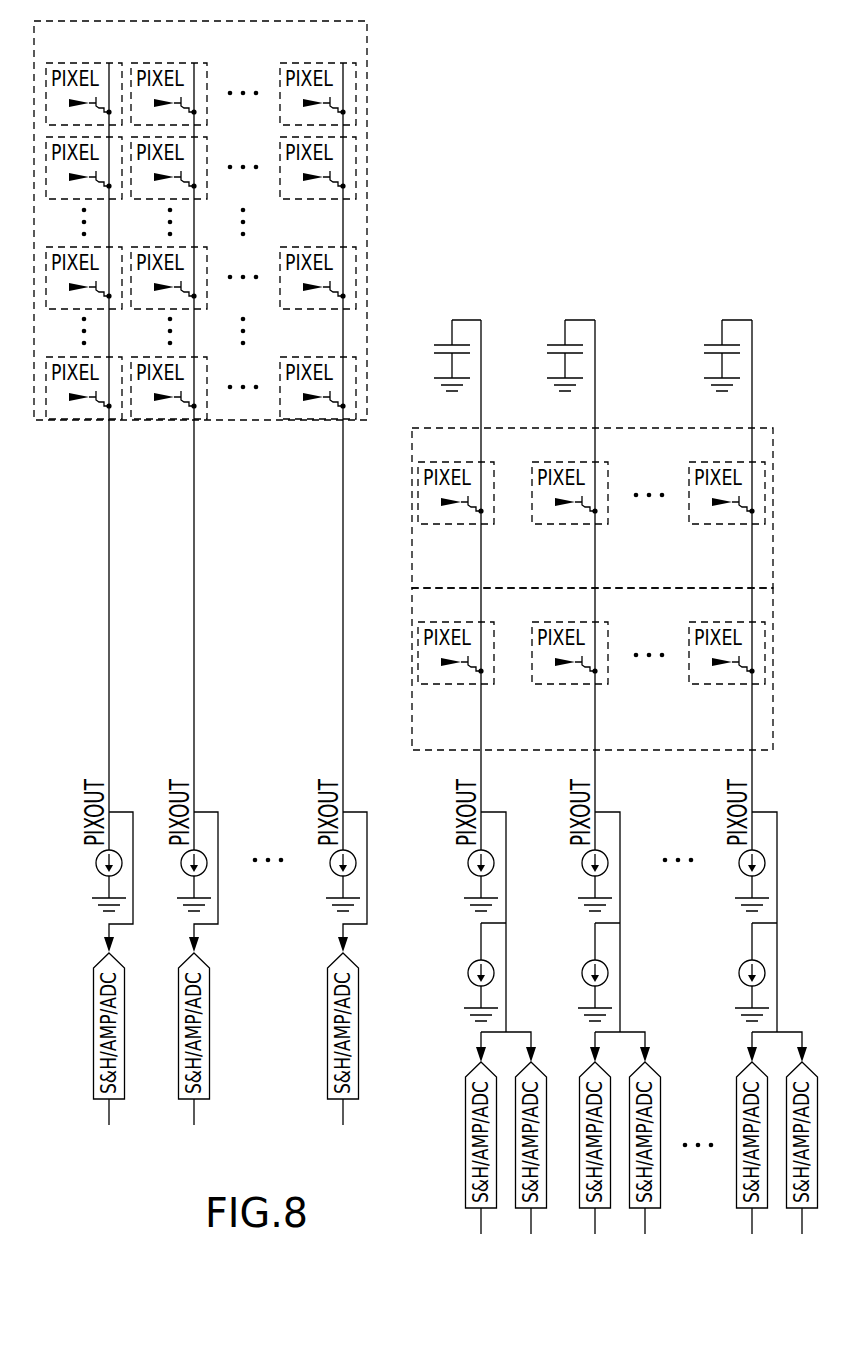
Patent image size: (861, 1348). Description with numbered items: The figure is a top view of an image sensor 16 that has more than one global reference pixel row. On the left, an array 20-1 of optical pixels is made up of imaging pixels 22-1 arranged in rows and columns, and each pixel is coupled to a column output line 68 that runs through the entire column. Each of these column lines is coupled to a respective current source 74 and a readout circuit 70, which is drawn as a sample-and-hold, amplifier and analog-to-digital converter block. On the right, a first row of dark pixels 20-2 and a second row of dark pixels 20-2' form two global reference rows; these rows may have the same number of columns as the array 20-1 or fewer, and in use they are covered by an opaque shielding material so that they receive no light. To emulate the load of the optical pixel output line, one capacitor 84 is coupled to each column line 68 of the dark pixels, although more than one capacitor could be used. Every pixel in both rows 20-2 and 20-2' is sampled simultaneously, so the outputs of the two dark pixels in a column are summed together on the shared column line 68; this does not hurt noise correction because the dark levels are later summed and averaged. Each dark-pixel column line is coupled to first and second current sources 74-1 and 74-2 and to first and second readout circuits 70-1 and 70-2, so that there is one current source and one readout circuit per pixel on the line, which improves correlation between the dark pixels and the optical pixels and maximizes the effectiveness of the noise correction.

The image sensor 16 is at (436, 647).
The array of optical pixels 20-1 is at (235, 435).
The imaging pixels 22-1 is at (99, 435).
The capacitor 84 is at (593, 331).
The column output line 68 is at (616, 585).
The first row of dark pixels 20-2 is at (623, 512).
The second row of dark pixels 20-2' is at (625, 676).
The current source 74 is at (309, 908).
The first current source 74-1 is at (441, 905).
The second current source 74-2 is at (440, 1022).
The readout circuit 70 is at (221, 1039).
The first readout circuit 70-1 is at (443, 1148).
The second readout circuit 70-2 is at (502, 1168).